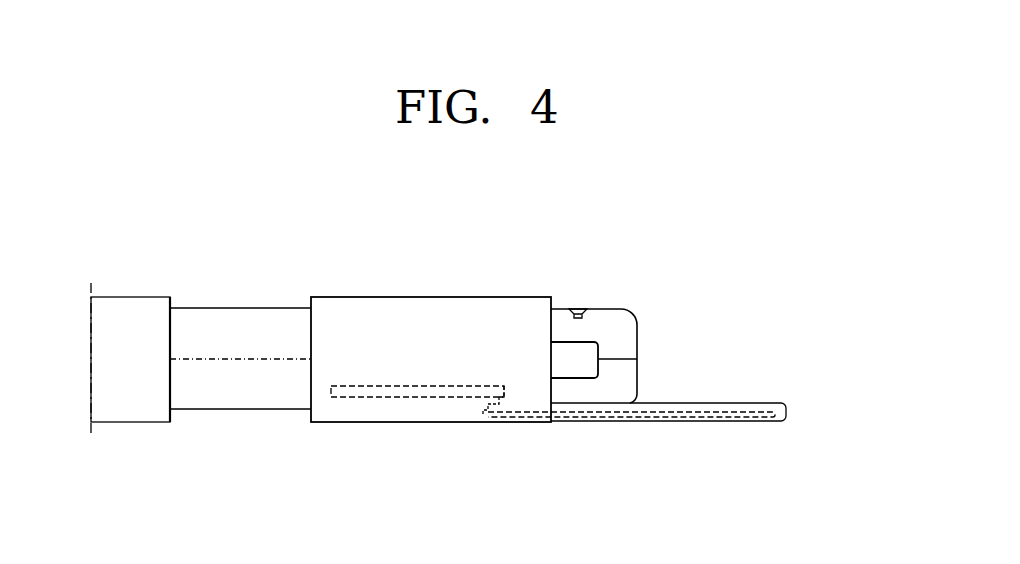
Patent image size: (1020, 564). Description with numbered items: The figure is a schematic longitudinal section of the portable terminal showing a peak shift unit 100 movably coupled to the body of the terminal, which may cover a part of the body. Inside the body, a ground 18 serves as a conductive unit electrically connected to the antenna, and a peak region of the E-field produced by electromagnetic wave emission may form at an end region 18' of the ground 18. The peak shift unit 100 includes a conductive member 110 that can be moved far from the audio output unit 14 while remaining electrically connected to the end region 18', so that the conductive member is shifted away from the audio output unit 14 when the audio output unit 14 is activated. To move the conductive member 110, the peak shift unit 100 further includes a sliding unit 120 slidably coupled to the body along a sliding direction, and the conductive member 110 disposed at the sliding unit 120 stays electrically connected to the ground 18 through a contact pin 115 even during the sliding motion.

The audio output unit 14 is at (577, 308).
The ground 18 is at (417, 440).
The end region 18' is at (515, 440).
The contact pin 115 is at (487, 405).
The peak shift unit 100 is at (678, 407).
The conductive member 110 is at (675, 413).
The sliding unit 120 is at (787, 409).